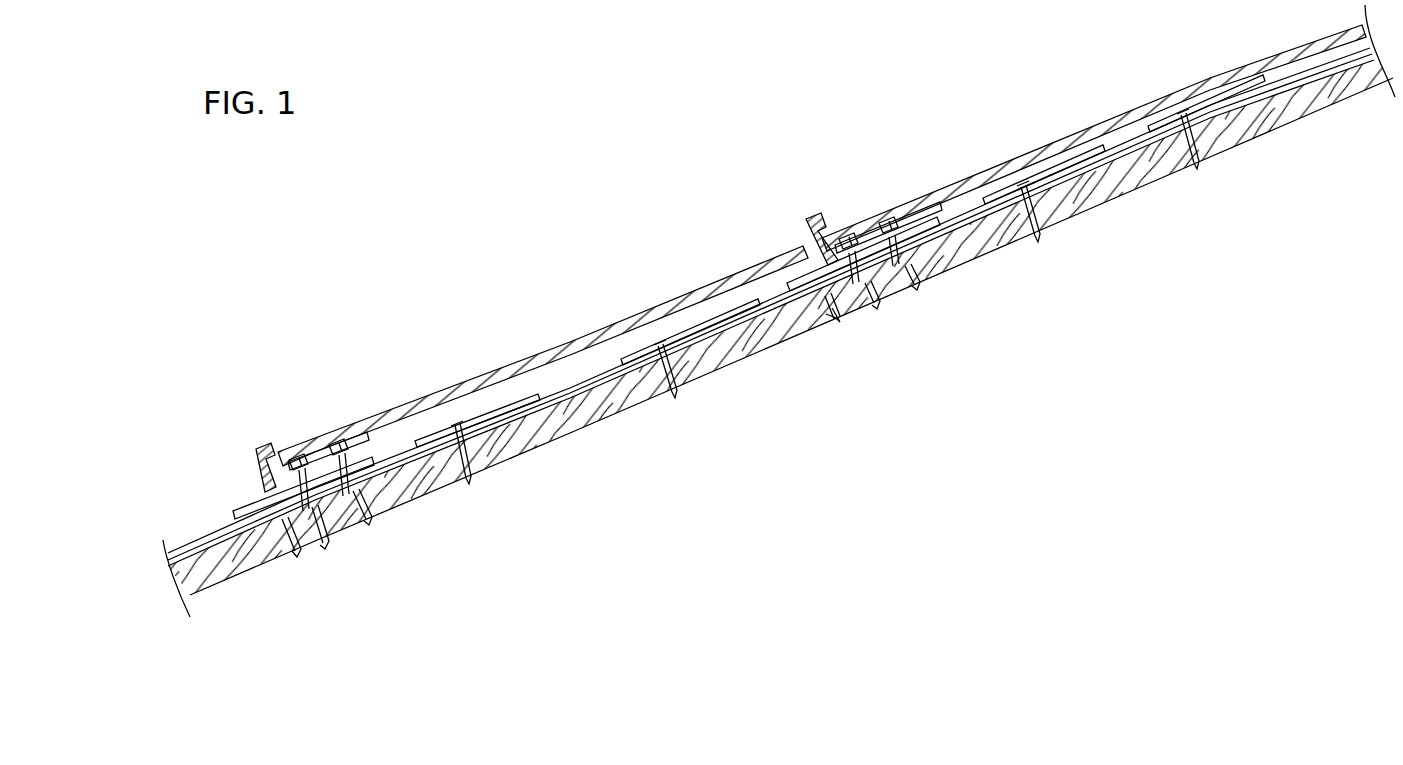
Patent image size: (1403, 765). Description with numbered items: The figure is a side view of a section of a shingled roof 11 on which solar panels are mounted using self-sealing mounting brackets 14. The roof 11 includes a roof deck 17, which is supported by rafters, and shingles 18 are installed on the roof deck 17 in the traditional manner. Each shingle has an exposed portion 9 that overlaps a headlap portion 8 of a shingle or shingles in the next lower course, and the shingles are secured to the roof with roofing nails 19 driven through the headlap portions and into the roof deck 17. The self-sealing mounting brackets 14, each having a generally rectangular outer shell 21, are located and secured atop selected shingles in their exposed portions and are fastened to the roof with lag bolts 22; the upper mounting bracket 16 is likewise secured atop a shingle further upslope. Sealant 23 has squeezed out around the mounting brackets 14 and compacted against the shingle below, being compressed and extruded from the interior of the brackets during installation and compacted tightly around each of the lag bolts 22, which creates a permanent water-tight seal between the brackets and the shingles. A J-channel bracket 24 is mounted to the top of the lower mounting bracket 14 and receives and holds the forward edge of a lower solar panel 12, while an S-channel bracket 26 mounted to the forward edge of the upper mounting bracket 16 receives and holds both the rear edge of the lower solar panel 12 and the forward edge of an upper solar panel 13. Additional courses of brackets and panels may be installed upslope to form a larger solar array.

The headlap portion 8 is at (515, 442).
The exposed portion 9 is at (484, 414).
The roof 11 is at (588, 188).
The lower solar panel 12 is at (600, 331).
The upper solar panel 13 is at (1035, 147).
The self-sealing mounting bracket 14 is at (372, 432).
The second bracket 16 is at (863, 215).
The roof deck 17 is at (745, 347).
The shingles 18 is at (1120, 140).
The roofing nails 19 is at (663, 400).
The outer shell 21 is at (316, 462).
The lag bolts 22 is at (330, 530).
The sealant 23 is at (285, 503).
The J-channel bracket 24 is at (260, 470).
The S-channel bracket 26 is at (805, 235).